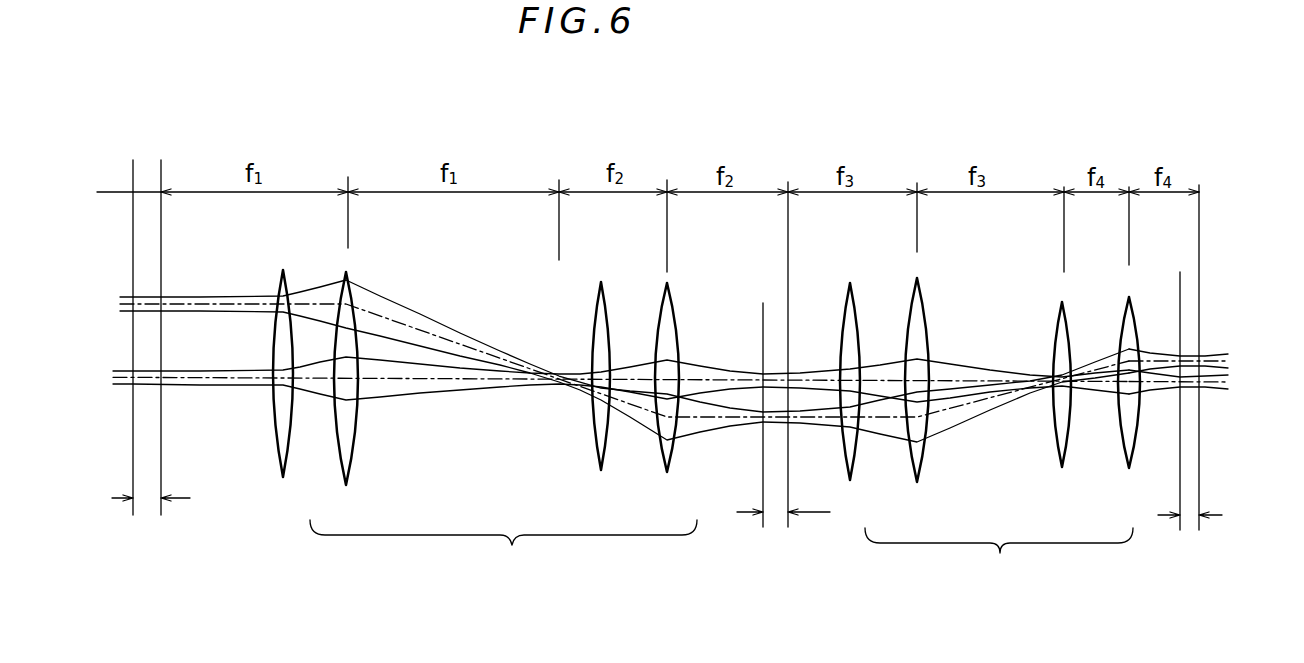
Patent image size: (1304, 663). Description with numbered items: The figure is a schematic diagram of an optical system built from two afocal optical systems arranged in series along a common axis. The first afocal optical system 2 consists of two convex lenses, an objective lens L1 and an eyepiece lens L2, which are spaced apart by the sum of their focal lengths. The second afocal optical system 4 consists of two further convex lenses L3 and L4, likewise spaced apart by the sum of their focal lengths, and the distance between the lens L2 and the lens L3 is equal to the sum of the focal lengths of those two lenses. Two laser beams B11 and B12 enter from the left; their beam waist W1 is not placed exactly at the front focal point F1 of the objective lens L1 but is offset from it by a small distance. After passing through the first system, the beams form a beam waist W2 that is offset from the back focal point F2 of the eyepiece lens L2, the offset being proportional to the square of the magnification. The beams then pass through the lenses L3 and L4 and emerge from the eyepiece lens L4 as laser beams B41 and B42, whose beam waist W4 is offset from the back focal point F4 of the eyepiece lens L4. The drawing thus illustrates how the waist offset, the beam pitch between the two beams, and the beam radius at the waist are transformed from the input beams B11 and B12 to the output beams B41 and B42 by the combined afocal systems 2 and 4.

The afocal optical system 2 is at (485, 431).
The afocal optical system 4 is at (990, 437).
The objective lens L1 is at (353, 463).
The eyepiece lens L2 is at (658, 457).
The convex lens L3 is at (918, 472).
The eyepiece lens L4 is at (1122, 453).
The laser beam B11 is at (215, 378).
The laser beam B12 is at (180, 302).
The laser beam B41 is at (1245, 383).
The laser beam B42 is at (1212, 357).
The beam waist W1 is at (116, 354).
The front focal point F1 is at (168, 354).
The beam waist W2 is at (744, 436).
The back focal point F2 is at (798, 375).
The beam waist W4 is at (1171, 424).
The back focal point F4 is at (1214, 380).